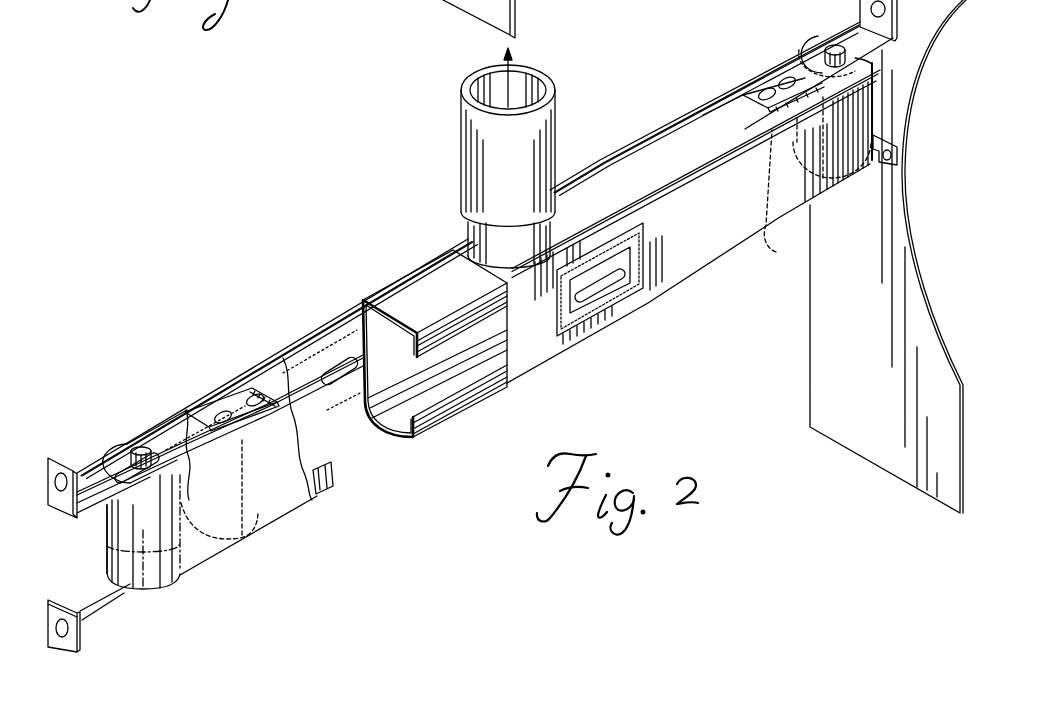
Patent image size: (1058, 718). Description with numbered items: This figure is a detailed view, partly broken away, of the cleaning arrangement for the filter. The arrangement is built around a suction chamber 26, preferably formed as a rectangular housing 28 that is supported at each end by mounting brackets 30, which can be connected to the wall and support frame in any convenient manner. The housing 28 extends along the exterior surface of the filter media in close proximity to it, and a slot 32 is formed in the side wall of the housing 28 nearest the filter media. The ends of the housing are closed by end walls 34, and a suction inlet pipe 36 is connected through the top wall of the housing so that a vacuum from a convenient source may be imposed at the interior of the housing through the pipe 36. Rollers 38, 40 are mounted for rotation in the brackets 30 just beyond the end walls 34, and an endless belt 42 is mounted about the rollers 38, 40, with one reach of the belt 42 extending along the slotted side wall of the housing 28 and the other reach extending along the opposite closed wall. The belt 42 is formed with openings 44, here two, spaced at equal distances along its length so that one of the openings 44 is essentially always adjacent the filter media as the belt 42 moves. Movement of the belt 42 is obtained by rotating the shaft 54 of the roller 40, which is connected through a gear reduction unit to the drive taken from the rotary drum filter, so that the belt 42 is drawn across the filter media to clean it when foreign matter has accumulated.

The suction chamber 26 is at (433, 293).
The rectangular housing 28 is at (377, 310).
The mounting brackets 30 is at (62, 457).
The slot 32 is at (436, 396).
The end walls 34 is at (248, 513).
The suction inlet pipe 36 is at (552, 116).
The roller 38 is at (125, 445).
The roller 40 is at (812, 48).
The endless belt 42 is at (326, 322).
The opening 44 is at (331, 373).
The shaft 54 is at (828, 44).